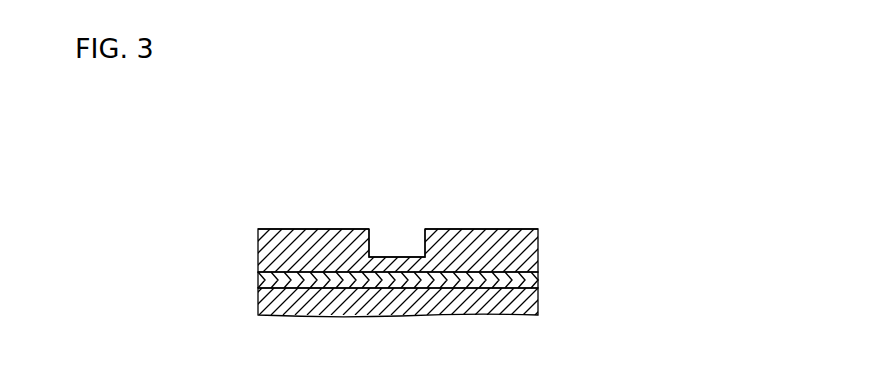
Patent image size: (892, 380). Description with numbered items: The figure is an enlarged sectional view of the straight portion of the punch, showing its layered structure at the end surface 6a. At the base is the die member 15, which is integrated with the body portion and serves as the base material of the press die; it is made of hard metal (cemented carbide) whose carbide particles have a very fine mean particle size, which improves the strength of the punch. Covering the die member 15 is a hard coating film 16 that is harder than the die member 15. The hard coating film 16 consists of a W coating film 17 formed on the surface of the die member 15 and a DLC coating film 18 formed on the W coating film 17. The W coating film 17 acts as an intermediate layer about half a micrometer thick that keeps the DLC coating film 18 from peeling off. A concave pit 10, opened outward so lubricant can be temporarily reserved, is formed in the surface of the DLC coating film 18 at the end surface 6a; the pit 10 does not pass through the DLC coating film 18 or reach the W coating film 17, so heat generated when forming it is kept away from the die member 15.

The end surface 6a is at (477, 183).
The pit 10 is at (369, 236).
The die member 15 is at (538, 305).
The hard coating film 16 is at (469, 248).
The W coating film 17 is at (538, 284).
The DLC coating film 18 is at (540, 241).